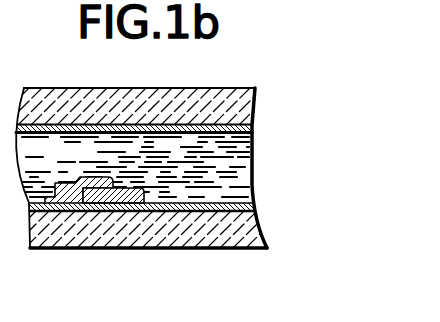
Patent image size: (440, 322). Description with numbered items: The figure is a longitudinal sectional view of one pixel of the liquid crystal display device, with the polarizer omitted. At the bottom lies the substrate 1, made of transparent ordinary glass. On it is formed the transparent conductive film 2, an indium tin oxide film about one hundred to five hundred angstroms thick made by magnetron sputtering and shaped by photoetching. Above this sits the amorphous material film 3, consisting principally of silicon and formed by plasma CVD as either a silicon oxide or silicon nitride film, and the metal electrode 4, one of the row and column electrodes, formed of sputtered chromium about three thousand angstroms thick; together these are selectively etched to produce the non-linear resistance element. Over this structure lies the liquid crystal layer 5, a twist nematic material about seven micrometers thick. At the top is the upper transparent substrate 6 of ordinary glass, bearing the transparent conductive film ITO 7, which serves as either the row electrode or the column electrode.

The substrate 1 is at (202, 234).
The transparent conductive film 2 is at (228, 203).
The amorphous material film 3 is at (78, 201).
The metal electrode 4 is at (52, 189).
The liquid crystal layer 5 is at (231, 163).
The upper transparent substrate 6 is at (203, 88).
The transparent conductive film ITO 7 is at (228, 126).